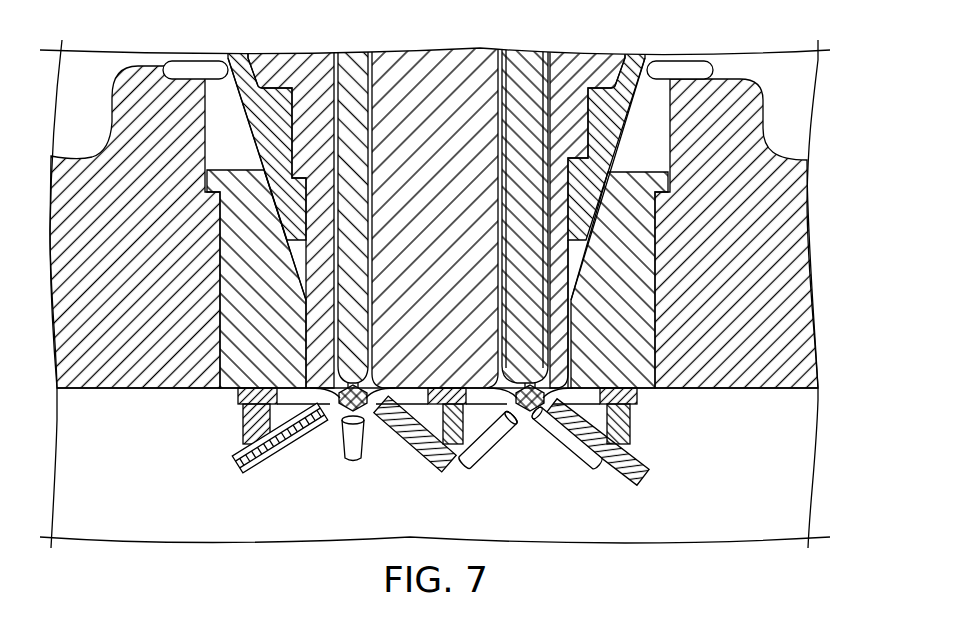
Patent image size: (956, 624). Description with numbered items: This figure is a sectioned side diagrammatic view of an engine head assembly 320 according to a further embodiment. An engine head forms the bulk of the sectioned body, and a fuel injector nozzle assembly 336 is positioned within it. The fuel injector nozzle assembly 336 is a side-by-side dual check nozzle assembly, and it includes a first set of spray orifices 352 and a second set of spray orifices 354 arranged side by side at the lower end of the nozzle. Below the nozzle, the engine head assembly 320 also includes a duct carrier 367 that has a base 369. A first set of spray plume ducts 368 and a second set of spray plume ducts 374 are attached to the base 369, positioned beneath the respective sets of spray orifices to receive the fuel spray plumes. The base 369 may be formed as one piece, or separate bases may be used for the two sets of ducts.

The engine head assembly 320 is at (763, 32).
The fuel injector nozzle assembly 336 is at (292, 291).
The first set of spray orifices 352 is at (398, 398).
The second set of spray orifices 354 is at (574, 387).
The duct carrier 367 is at (652, 413).
The first set of spray plume ducts 368 is at (288, 448).
The base 369 is at (237, 393).
The second set of spray plume ducts 374 is at (562, 436).